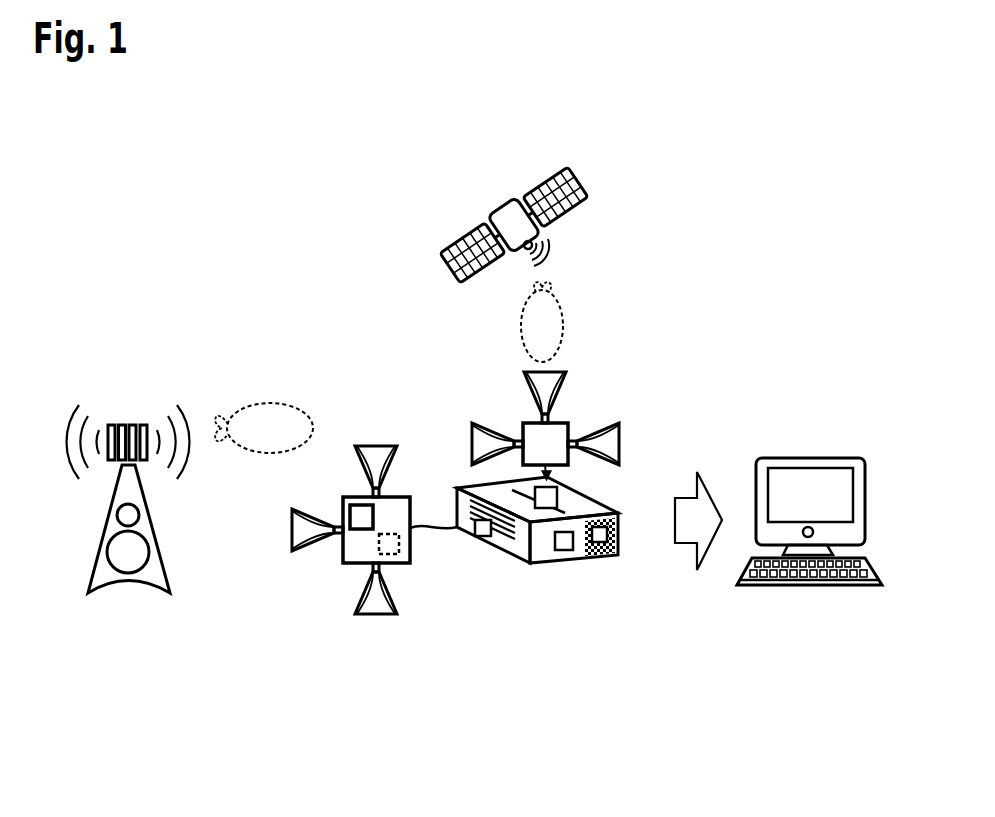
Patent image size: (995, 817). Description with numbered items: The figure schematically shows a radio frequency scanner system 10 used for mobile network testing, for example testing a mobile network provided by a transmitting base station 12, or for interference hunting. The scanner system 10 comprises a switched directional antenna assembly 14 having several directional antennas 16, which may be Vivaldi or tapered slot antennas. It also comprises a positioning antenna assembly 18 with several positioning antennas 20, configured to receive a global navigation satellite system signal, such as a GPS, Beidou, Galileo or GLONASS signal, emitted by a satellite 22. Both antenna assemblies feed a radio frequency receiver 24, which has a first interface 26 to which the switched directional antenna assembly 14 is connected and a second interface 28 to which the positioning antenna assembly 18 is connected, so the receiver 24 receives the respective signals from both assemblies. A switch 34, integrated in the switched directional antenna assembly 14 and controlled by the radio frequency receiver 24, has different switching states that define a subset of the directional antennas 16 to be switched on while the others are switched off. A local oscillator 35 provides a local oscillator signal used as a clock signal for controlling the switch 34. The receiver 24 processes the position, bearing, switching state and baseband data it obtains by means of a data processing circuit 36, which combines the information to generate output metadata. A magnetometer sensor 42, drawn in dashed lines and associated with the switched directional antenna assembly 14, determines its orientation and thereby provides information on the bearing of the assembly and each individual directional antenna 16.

The radio frequency scanner system 10 is at (739, 230).
The base station 12 is at (102, 533).
The switched directional antenna assembly 14 is at (352, 565).
The directional antennas 16 is at (385, 446).
The positioning antenna assembly 18 is at (566, 421).
The positioning antennas 20 is at (478, 425).
The satellite 22 is at (500, 205).
The radio frequency receiver 24 is at (553, 563).
The first interface 26 is at (480, 536).
The second interface 28 is at (557, 495).
The switch 34 is at (358, 505).
The local oscillator 35 is at (567, 551).
The data processing circuit 36 is at (620, 548).
The magnetometer sensor 42 is at (388, 533).